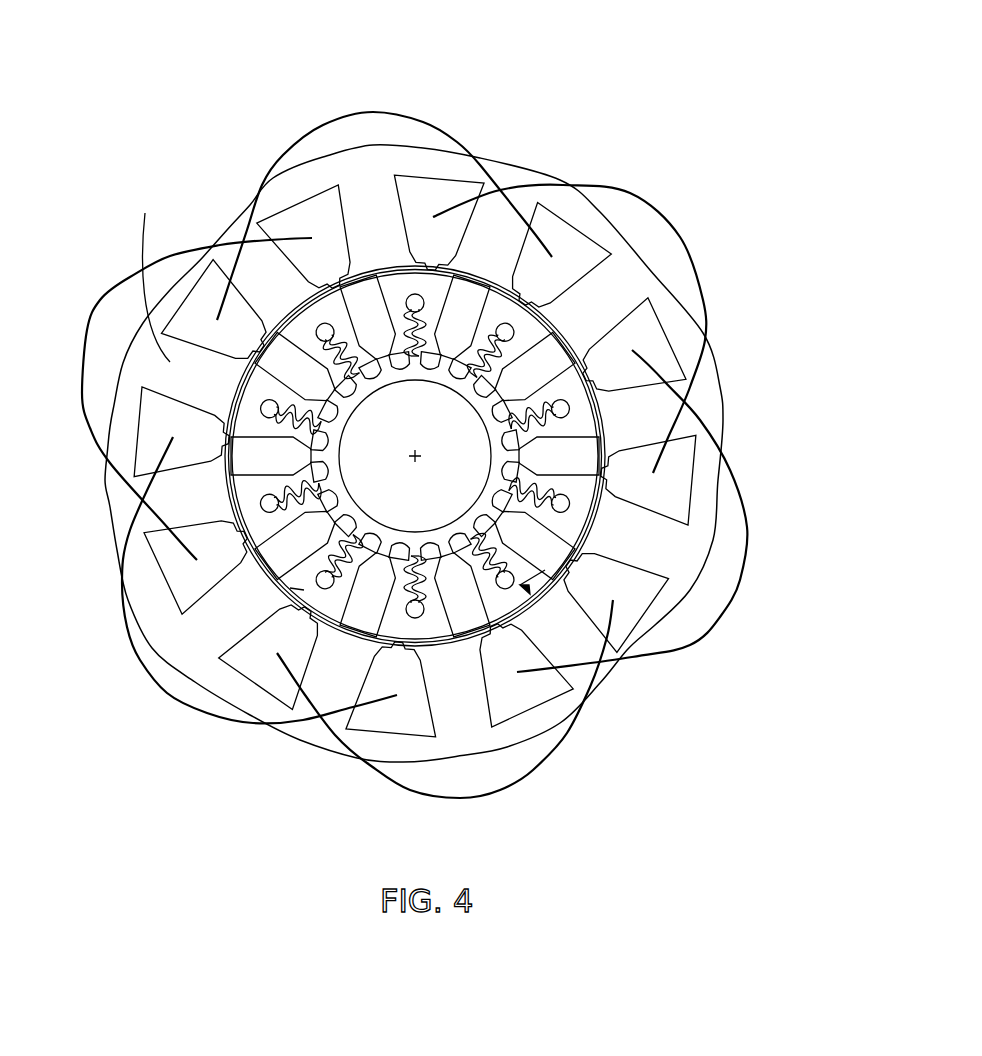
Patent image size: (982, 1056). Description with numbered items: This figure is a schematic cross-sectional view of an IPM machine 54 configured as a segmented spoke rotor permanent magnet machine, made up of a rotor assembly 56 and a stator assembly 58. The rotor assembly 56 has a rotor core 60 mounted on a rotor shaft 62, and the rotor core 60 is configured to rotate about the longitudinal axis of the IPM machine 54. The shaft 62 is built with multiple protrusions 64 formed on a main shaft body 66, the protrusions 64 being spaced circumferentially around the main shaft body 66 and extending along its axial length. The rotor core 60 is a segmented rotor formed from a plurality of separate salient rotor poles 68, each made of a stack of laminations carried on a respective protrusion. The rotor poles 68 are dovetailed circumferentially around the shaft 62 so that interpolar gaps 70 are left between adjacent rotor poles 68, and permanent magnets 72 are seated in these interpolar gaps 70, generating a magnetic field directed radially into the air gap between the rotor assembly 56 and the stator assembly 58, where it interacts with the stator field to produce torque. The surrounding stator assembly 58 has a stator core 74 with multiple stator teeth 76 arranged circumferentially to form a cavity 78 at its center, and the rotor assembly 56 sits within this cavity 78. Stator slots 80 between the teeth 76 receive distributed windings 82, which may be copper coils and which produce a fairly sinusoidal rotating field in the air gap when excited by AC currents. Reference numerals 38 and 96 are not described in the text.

The spring 38 is at (465, 288).
The IPM machine 54 is at (638, 99).
The rotor assembly 56 is at (412, 522).
The stator assembly 58 is at (106, 399).
The rotor core 60 is at (590, 630).
The rotor shaft 62 is at (438, 524).
The protrusions 64 is at (327, 330).
The main shaft body 66 is at (402, 373).
The rotor poles 68 is at (382, 660).
The interpolar gaps 70 is at (273, 384).
The permanent magnets 72 is at (540, 305).
The stator core 74 is at (722, 386).
The stator teeth 76 is at (242, 285).
The cavity 78 is at (418, 258).
The stator slots 80 is at (359, 735).
The distributed windings 82 is at (130, 287).
The poles 96 is at (583, 530).